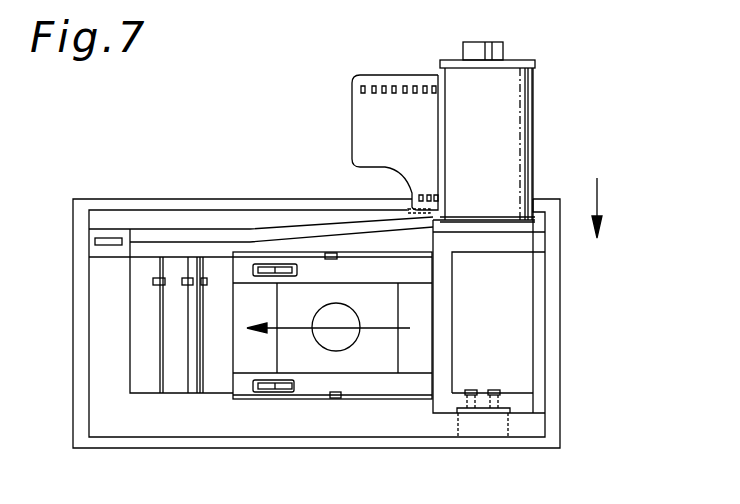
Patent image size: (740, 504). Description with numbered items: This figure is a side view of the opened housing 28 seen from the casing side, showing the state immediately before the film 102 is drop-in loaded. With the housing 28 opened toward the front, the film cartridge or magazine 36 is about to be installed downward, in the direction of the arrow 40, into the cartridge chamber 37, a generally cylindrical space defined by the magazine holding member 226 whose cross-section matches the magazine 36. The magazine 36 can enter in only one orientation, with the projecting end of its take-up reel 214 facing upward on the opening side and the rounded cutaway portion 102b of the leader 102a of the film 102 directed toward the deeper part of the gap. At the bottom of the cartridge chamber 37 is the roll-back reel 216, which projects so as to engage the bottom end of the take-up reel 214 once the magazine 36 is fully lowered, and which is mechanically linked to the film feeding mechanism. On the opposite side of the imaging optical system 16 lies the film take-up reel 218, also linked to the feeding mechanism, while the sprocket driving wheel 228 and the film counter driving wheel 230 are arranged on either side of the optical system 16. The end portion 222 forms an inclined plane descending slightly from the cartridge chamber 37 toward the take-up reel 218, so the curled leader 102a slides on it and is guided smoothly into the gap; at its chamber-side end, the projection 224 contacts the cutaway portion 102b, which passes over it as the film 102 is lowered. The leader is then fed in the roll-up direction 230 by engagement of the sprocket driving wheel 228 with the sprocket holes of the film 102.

The imaging optical system 16 is at (345, 340).
The housing 28 is at (143, 199).
The film cartridge 36 is at (535, 101).
The cartridge chamber 37 is at (512, 333).
The arrow 40 is at (597, 195).
The film 102 is at (417, 74).
The leader 102a is at (352, 105).
The cutaway portion 102b is at (408, 187).
The take-up reel 214 is at (497, 42).
The roll-back reel 216 is at (500, 386).
The film take-up reel 218 is at (173, 381).
The end portion 222 is at (312, 226).
The projection 224 is at (415, 214).
The magazine holding member 226 is at (525, 244).
The sprocket driving wheel 228 is at (280, 392).
The film counter driving wheel 230 is at (260, 264).